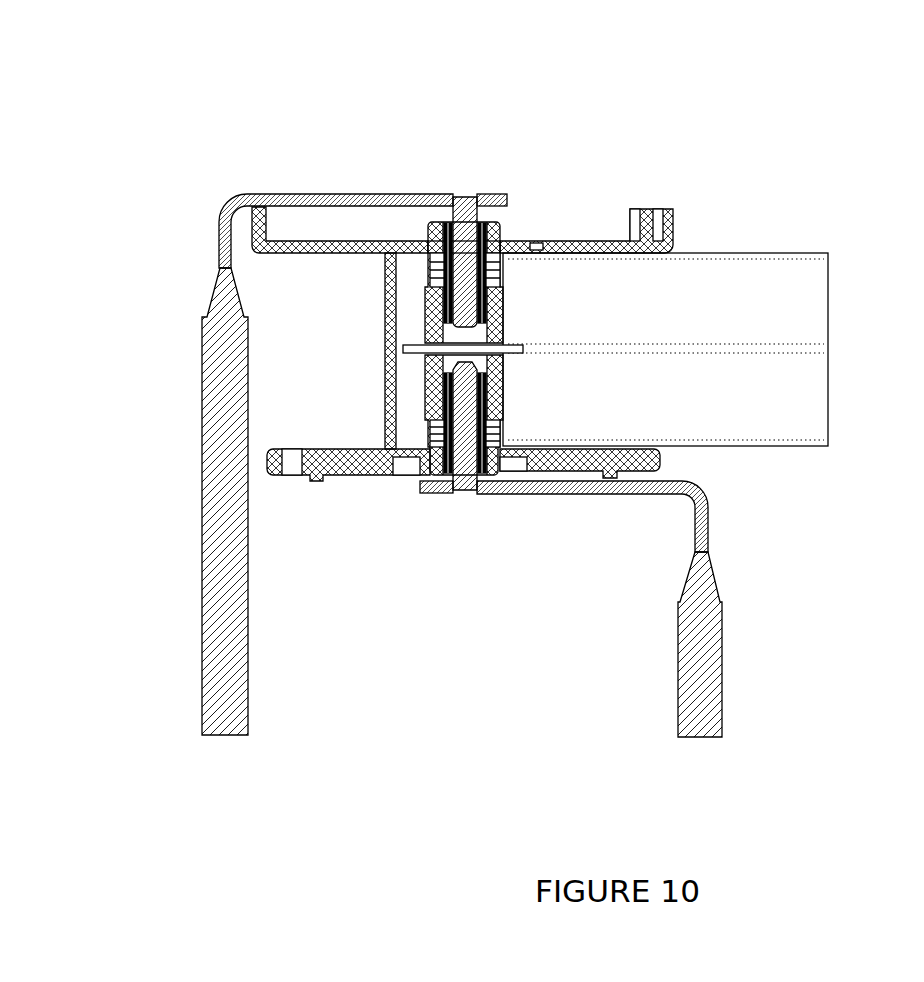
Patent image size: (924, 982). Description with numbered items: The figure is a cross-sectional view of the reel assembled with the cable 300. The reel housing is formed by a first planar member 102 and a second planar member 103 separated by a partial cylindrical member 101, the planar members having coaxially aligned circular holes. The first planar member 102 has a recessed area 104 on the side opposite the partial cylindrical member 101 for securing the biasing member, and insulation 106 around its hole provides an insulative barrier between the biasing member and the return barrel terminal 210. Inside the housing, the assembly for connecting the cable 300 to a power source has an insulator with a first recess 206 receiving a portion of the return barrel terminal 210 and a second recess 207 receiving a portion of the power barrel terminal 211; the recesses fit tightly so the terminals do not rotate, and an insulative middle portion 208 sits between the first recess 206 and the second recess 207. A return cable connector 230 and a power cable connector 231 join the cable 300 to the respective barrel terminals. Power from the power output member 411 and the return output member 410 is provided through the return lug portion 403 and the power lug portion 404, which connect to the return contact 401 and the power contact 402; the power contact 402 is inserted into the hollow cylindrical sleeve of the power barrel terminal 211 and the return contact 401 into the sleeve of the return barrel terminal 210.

The partial cylindrical member 101 is at (385, 307).
The first planar member 102 is at (673, 211).
The second planar member 103 is at (333, 465).
The recessed area 104 is at (347, 228).
The insulation 106 is at (438, 215).
The first recess 206 is at (504, 307).
The second recess 207 is at (504, 385).
The insulative middle portion 208 is at (433, 347).
The return barrel terminal 210 is at (484, 250).
The power barrel terminal 211 is at (447, 470).
The return cable connector 230 is at (490, 265).
The power cable connector 231 is at (490, 437).
The cable 300 is at (830, 293).
The return contact 401 is at (470, 212).
The power contact 402 is at (463, 465).
The return lug portion 403 is at (237, 196).
The power lug portion 404 is at (567, 492).
The return output member 410 is at (215, 648).
The power output member 411 is at (722, 676).